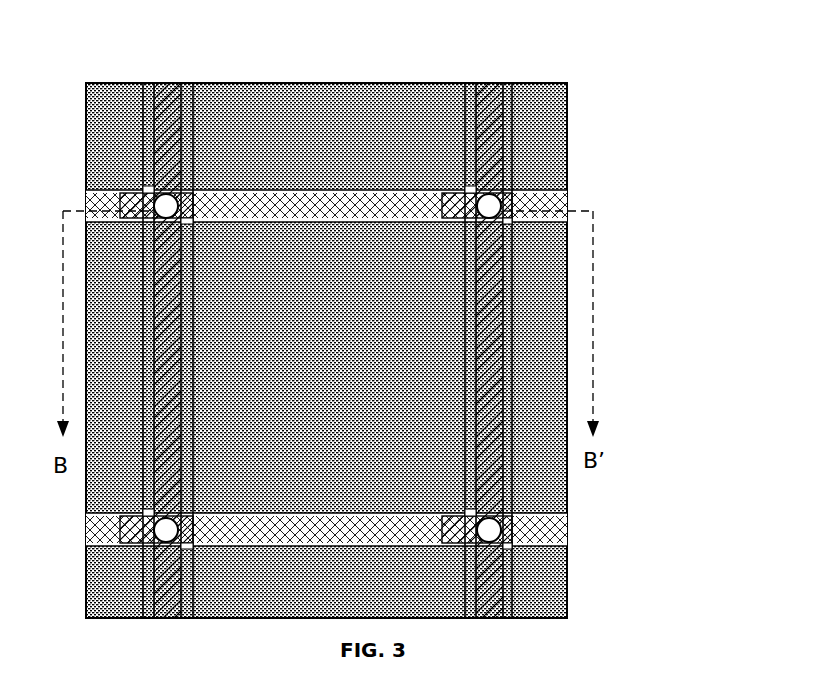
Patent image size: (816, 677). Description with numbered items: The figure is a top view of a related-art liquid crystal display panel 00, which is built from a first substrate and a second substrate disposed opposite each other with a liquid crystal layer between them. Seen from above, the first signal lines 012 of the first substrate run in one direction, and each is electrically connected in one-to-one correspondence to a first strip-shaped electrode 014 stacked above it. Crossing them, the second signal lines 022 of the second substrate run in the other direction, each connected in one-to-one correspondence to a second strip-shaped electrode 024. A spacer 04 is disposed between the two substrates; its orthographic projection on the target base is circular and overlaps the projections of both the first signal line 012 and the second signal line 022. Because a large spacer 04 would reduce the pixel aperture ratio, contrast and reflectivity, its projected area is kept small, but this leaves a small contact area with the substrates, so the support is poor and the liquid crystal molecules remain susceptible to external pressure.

The liquid crystal display panel 00 is at (363, 324).
The first signal line 012 is at (490, 162).
The first strip-shaped electrode 014 is at (537, 352).
The second signal line 022 is at (512, 203).
The second strip-shaped electrode 024 is at (510, 296).
The spacer 04 is at (160, 204).